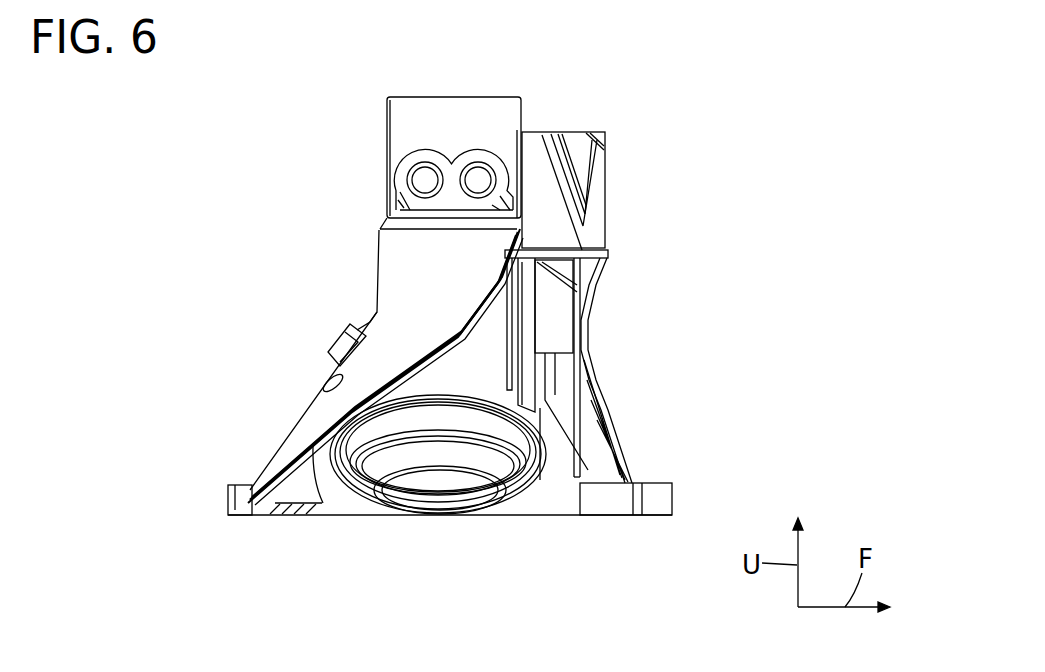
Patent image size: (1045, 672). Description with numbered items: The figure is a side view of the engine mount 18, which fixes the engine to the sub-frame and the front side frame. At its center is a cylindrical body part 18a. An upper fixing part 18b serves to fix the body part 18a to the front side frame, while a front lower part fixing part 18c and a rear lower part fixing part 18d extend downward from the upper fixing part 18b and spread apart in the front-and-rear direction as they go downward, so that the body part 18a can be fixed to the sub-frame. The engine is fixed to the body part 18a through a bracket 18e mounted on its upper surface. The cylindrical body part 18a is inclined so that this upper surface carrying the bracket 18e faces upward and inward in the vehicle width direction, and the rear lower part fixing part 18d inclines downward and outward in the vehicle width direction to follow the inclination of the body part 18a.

The engine mount 18 is at (318, 236).
The cylindrical body part 18a is at (473, 353).
The upper fixing part 18b is at (606, 173).
The front lower part fixing part 18c is at (607, 405).
The rear lower part fixing part 18d is at (300, 392).
The bracket 18e is at (405, 97).